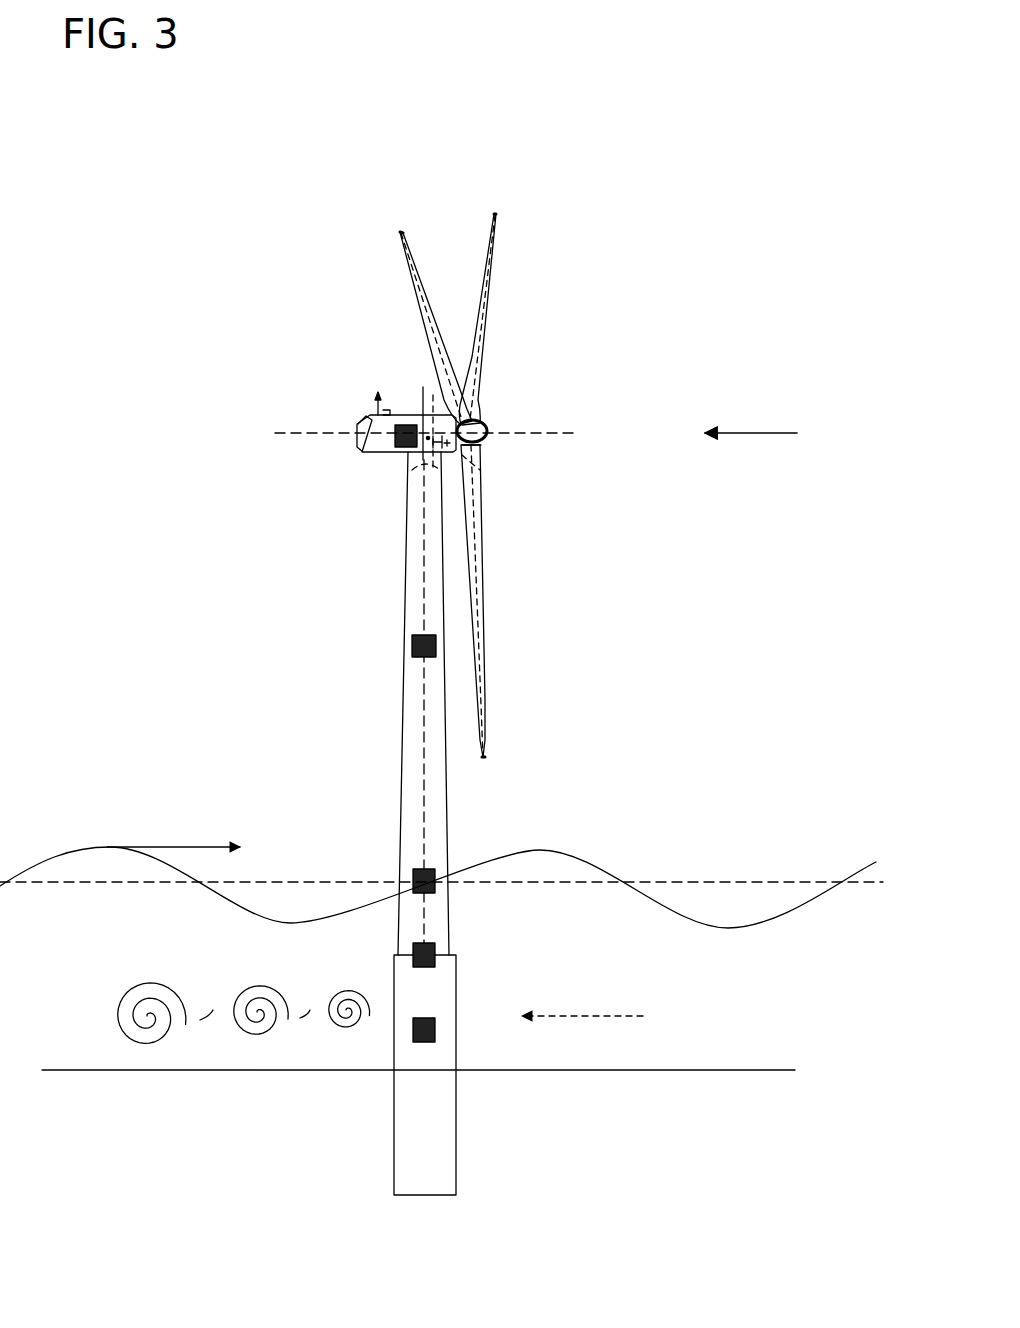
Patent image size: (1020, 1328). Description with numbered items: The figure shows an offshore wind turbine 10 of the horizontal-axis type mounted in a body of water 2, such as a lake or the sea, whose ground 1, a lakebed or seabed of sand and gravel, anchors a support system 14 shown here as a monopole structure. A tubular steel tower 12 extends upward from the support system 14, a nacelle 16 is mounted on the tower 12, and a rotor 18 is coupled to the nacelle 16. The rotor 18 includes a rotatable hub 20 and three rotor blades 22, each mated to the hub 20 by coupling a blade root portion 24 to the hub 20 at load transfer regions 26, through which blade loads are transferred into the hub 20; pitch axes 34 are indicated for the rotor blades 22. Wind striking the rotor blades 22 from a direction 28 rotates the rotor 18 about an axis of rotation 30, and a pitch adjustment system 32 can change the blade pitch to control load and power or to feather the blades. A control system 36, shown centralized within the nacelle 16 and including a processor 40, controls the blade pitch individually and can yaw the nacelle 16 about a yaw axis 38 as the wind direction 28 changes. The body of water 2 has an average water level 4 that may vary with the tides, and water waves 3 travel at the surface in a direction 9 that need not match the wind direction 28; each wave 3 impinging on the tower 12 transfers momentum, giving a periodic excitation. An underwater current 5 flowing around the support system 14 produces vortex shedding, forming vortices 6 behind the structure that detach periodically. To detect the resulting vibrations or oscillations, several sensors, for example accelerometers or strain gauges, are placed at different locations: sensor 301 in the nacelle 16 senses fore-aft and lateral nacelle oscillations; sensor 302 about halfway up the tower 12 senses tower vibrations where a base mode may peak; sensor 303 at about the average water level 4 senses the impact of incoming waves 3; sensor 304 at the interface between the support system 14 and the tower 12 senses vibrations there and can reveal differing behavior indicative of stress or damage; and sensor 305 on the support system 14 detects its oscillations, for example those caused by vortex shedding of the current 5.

The ground 1 is at (70, 1070).
The body of water 2 is at (843, 952).
The water waves 3 is at (107, 847).
The average water level 4 is at (755, 882).
The current 5 is at (643, 1016).
The vortices 6 is at (138, 978).
The direction of the water waves 9 is at (208, 847).
The offshore wind turbine 10 is at (201, 238).
The tower 12 is at (406, 578).
The support system 14 is at (394, 1112).
The nacelle 16 is at (382, 452).
The rotor 18 is at (497, 343).
The rotatable hub 20 is at (486, 428).
The rotor blade 22 is at (417, 293).
The blade root portion 24 is at (478, 528).
The load transfer regions 26 is at (475, 450).
The direction of the wind 28 is at (767, 433).
The axis of rotation 30 is at (548, 434).
The pitch adjustment system 32 is at (462, 455).
The pitch axes 34 is at (398, 233).
The control system 36 is at (428, 463).
The yaw axis 38 is at (426, 802).
The processor 40 is at (433, 395).
The sensor 301 is at (385, 432).
The sensor 302 is at (412, 645).
The sensor 303 is at (412, 872).
The sensor 304 is at (437, 948).
The sensor 305 is at (437, 1030).